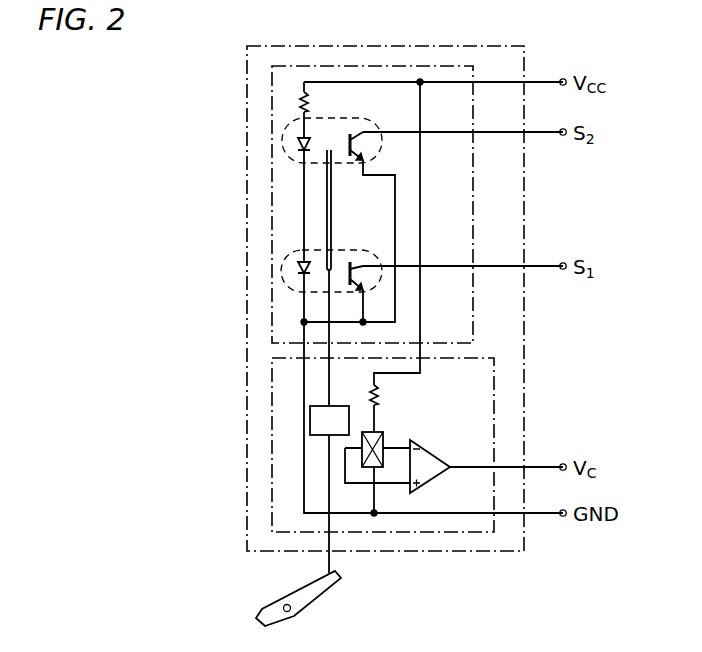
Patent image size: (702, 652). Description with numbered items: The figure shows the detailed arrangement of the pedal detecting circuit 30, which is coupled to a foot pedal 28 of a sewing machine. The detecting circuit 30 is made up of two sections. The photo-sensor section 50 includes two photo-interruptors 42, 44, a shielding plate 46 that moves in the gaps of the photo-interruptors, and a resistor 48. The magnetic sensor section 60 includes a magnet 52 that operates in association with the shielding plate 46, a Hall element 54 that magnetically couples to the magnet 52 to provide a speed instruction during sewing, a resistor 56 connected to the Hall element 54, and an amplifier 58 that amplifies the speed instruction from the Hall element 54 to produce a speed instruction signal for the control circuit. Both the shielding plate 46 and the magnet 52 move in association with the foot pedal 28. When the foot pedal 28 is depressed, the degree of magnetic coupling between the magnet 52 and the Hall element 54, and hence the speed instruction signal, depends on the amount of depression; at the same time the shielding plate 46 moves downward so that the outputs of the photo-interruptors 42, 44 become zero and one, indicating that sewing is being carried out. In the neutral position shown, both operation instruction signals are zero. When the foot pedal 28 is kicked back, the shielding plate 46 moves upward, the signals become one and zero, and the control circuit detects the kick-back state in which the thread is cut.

The foot pedal 28 is at (268, 605).
The pedal detecting circuit 30 is at (462, 552).
The photo-interruptor 42 is at (282, 145).
The photo-interruptor 44 is at (282, 262).
The shielding plate 46 is at (331, 213).
The resistor 48 is at (304, 103).
The photo-sensor section 50 is at (418, 66).
The magnet 52 is at (310, 420).
The Hall element 54 is at (383, 440).
The resistor 56 is at (378, 395).
The amplifier 58 is at (430, 448).
The magnetic sensor section 60 is at (387, 533).